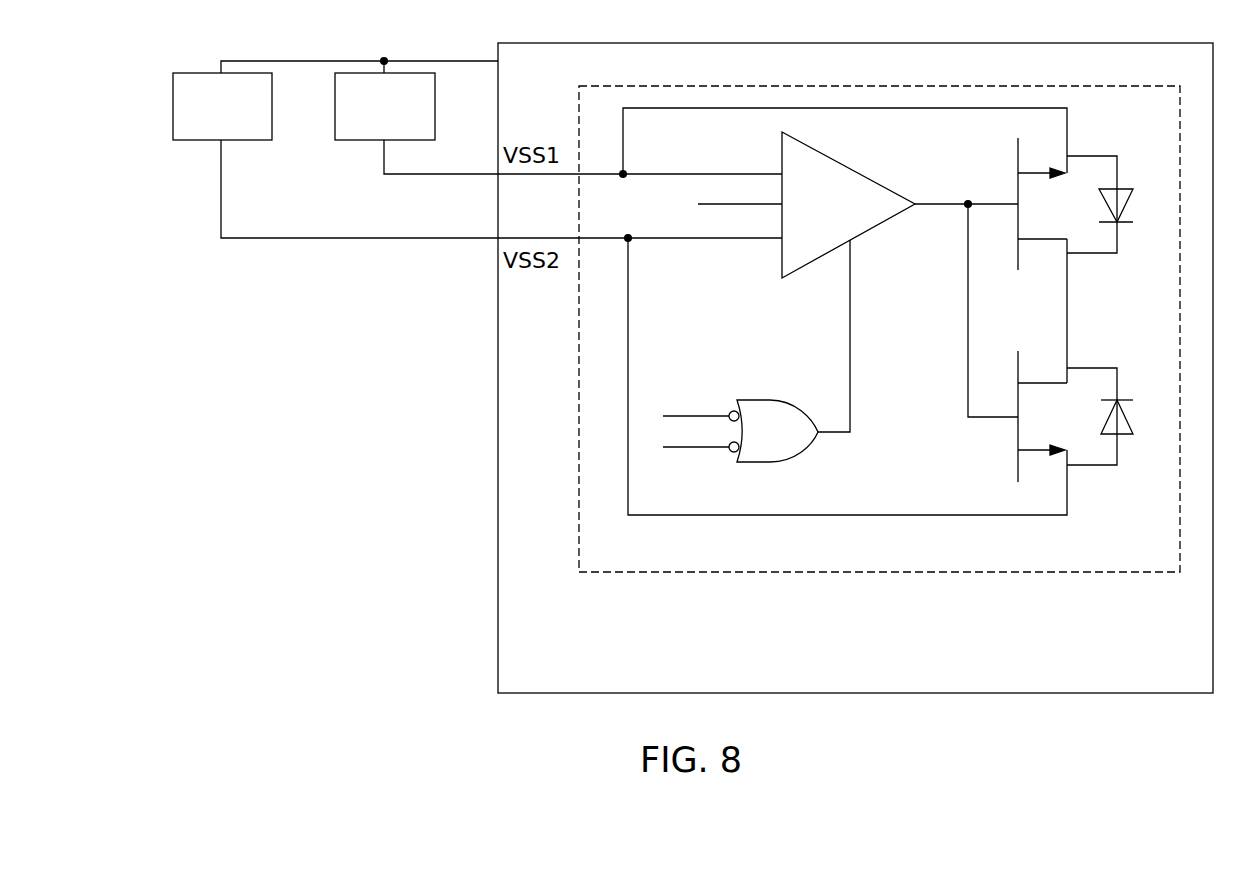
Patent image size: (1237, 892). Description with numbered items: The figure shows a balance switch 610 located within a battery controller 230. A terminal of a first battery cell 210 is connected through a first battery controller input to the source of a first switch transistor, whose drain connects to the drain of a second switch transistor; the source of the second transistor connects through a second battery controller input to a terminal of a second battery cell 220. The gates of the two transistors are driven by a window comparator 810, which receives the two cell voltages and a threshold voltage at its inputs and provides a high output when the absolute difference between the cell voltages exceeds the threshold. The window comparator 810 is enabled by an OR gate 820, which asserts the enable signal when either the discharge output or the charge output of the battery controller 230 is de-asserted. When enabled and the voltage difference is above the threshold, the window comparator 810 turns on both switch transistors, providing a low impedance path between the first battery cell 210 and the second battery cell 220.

The first battery cell 210 is at (360, 142).
The second battery cell 220 is at (241, 142).
The battery controller 230 is at (1167, 694).
The balance switch 610 is at (677, 573).
The window comparator 810 is at (870, 176).
The OR gate 820 is at (793, 453).